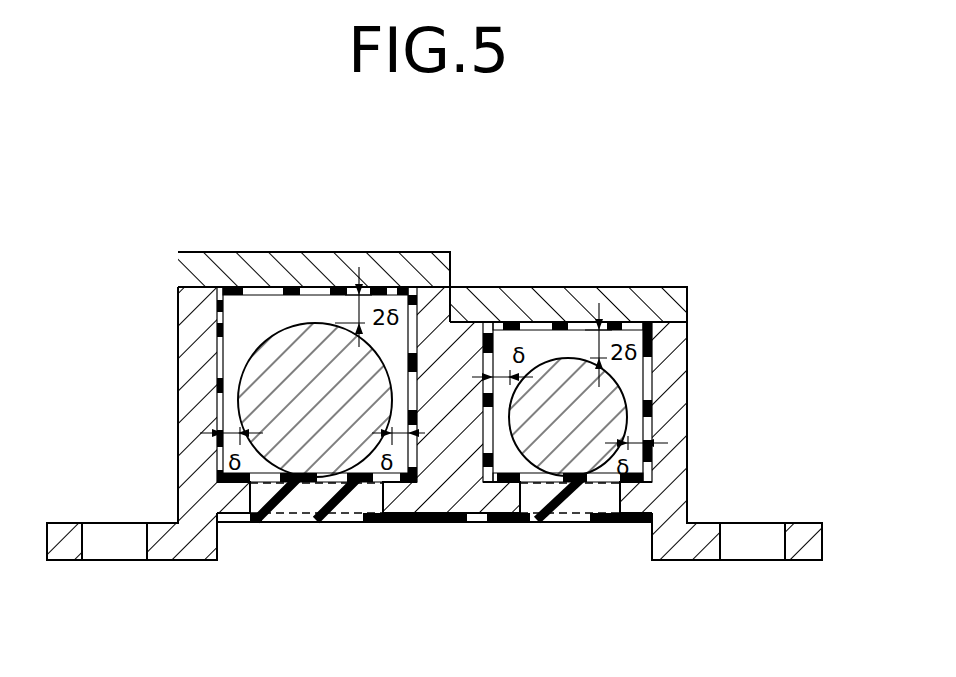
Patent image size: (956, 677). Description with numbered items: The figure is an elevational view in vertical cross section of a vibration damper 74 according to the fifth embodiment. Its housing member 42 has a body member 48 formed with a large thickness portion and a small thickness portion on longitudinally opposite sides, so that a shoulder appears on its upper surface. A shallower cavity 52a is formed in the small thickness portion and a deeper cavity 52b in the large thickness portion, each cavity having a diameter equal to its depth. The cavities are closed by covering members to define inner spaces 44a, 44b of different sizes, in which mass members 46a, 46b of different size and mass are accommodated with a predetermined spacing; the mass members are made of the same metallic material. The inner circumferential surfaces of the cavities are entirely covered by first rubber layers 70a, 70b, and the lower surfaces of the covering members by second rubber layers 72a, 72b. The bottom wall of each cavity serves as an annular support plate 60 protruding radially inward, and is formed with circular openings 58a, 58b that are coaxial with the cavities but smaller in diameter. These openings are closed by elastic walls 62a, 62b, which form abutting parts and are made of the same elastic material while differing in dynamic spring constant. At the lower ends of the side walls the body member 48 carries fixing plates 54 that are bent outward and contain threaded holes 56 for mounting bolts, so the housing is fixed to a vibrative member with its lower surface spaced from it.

The housing member 42 is at (475, 239).
The vibration damper 74 is at (720, 288).
The body member 48 is at (672, 405).
The fixing plates 54 is at (165, 540).
The threaded holes 56 is at (85, 540).
The cavity 52a is at (504, 332).
The cavity 52b is at (224, 322).
The first rubber layer 70a is at (655, 340).
The first rubber layer 70b is at (222, 372).
The inner space 44a is at (580, 330).
The inner space 44b is at (333, 292).
The second rubber layer 72a is at (546, 330).
The second rubber layer 72b is at (322, 312).
The mass member 46a is at (631, 378).
The mass member 46b is at (252, 345).
The annular support plate 60 is at (237, 492).
The elastic wall 62a is at (542, 504).
The elastic wall 62b is at (313, 503).
The circular opening 58a is at (598, 507).
The circular opening 58b is at (363, 504).